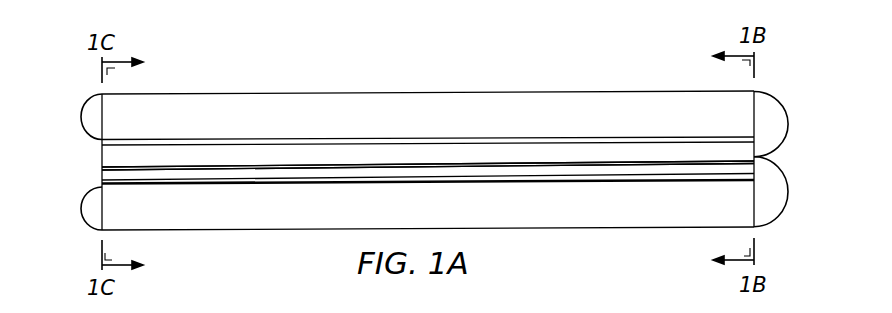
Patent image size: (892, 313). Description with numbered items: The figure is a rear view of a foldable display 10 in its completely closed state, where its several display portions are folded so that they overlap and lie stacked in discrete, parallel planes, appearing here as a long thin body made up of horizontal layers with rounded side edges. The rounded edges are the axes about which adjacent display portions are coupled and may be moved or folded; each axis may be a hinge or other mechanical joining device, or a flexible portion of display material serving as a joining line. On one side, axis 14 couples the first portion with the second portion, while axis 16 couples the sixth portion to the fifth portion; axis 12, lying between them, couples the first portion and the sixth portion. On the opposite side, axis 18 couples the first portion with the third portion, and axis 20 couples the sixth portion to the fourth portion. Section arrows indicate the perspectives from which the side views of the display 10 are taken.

The display 10 is at (304, 92).
The axis 12 is at (102, 163).
The axis 14 is at (90, 118).
The axis 16 is at (88, 208).
The axis 18 is at (777, 123).
The axis 20 is at (777, 193).